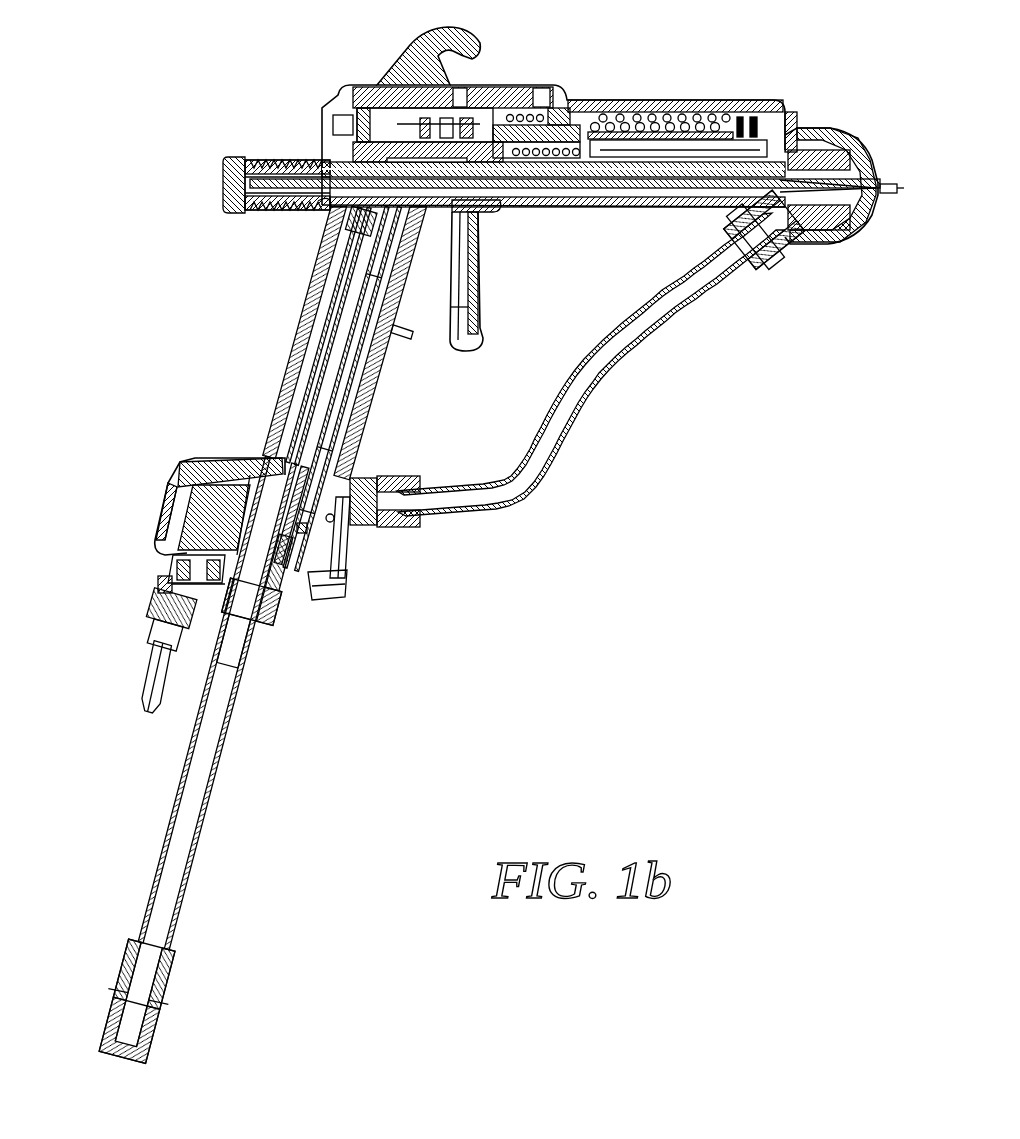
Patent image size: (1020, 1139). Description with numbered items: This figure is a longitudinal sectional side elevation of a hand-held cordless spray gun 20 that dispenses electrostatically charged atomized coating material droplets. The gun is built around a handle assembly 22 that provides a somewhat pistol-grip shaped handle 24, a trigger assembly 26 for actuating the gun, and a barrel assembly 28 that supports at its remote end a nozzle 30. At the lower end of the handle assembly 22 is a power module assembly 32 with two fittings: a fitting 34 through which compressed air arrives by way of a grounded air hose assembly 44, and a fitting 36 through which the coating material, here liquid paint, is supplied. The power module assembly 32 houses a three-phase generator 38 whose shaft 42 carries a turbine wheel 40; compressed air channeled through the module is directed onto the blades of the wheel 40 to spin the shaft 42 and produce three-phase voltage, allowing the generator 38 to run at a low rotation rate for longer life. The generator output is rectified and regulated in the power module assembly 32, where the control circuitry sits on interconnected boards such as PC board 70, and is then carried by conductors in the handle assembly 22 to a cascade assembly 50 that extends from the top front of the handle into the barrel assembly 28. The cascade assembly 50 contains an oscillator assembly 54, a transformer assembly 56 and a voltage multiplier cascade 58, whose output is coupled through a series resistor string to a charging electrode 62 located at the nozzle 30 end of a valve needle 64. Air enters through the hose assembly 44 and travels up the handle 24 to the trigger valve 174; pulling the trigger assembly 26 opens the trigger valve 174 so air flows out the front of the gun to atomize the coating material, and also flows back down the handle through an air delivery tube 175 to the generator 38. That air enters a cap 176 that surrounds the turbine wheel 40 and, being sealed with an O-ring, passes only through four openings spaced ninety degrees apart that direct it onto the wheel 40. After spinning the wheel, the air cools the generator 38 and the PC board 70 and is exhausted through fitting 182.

The hand-held cordless spray gun 20 is at (627, 513).
The handle assembly 22 is at (264, 623).
The handle 24 is at (283, 380).
The trigger assembly 26 is at (497, 258).
The barrel assembly 28 is at (563, 175).
The nozzle 30 is at (842, 190).
The power module assembly 32 is at (234, 560).
The fitting 34 is at (280, 597).
The fitting 36 is at (347, 593).
The three-phase generator 38 is at (175, 517).
The turbine wheel 40 is at (160, 568).
The shaft 42 is at (157, 580).
The grounded air hose assembly 44 is at (239, 631).
The cascade assembly 50 is at (750, 100).
The oscillator assembly 54 is at (482, 122).
The transformer assembly 56 is at (572, 115).
The voltage multiplier cascade 58 is at (693, 112).
The charging electrode 62 is at (897, 194).
The valve needle 64 is at (683, 205).
The PC board 70 is at (243, 463).
The trigger valve 174 is at (357, 213).
The air delivery tube 175 is at (336, 418).
The cap 176 is at (160, 637).
The fitting 182 is at (155, 683).